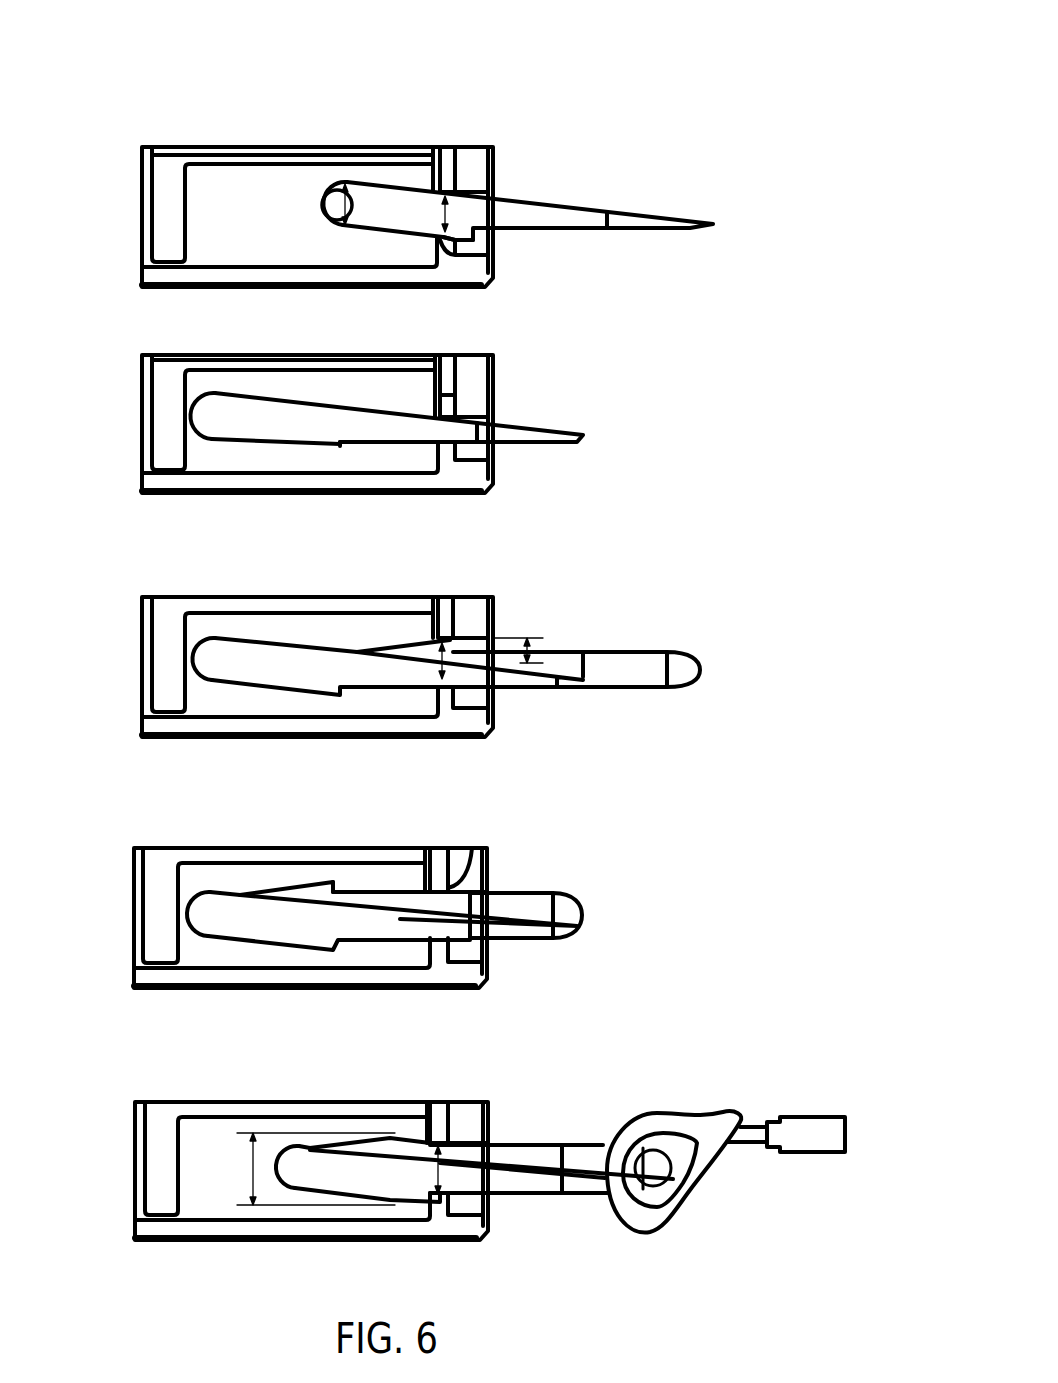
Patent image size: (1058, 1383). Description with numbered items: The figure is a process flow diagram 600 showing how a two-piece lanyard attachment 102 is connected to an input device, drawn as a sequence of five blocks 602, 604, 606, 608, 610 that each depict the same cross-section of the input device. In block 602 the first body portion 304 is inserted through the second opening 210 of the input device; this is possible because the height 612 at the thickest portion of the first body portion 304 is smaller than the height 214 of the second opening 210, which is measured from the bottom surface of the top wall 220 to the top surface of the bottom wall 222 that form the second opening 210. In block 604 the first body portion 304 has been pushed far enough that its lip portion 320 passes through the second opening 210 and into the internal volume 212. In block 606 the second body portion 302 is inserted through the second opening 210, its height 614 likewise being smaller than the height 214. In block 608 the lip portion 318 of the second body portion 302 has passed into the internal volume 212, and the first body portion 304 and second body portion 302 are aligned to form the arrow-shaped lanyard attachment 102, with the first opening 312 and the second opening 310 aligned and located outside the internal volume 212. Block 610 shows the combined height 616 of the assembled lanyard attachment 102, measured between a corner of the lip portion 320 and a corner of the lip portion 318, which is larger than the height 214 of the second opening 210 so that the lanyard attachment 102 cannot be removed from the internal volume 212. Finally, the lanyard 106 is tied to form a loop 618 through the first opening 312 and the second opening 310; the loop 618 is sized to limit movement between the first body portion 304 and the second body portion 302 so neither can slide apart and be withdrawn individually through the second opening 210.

The process flow diagram 600 is at (79, 38).
The block 602 is at (141, 198).
The block 604 is at (141, 406).
The block 606 is at (141, 641).
The block 608 is at (133, 895).
The block 610 is at (133, 1141).
The internal volume 212 is at (232, 170).
The second opening 210 is at (450, 205).
The height 214 is at (448, 210).
The top wall 220 is at (444, 192).
The bottom wall 222 is at (490, 240).
The first body portion 304 is at (590, 207).
The height 612 is at (323, 200).
The lip portion 320 is at (345, 446).
The height 614 is at (543, 638).
The second body portion 302 is at (573, 650).
The lip portion 318 is at (342, 878).
The lanyard attachment 102 is at (570, 882).
The second opening 310 is at (527, 893).
The first opening 312 is at (537, 938).
The combined height 616 is at (252, 1163).
The loop 618 is at (688, 1208).
The lanyard 106 is at (755, 1122).